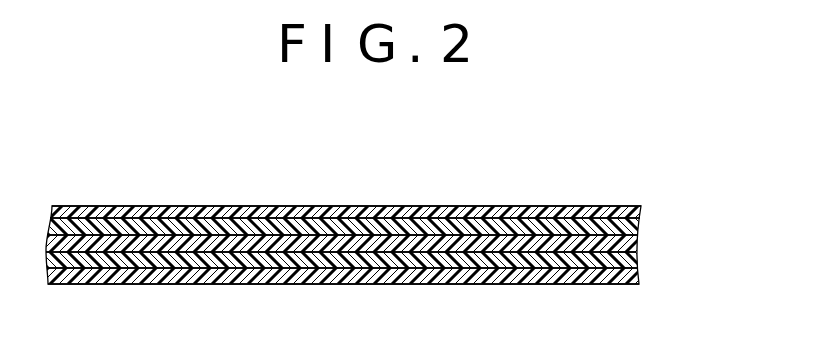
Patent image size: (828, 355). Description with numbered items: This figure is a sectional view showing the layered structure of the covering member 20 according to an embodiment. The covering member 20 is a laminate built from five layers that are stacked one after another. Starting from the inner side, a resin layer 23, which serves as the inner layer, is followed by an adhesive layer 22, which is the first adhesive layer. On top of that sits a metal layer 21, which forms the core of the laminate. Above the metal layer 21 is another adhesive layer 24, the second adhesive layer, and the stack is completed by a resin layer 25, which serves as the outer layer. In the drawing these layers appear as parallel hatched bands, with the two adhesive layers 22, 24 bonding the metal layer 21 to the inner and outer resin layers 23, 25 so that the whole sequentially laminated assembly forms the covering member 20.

The covering member 20 is at (483, 190).
The metal layer 21 is at (636, 245).
The adhesive layer 22 is at (634, 262).
The resin layer 23 is at (636, 279).
The adhesive layer 24 is at (637, 229).
The resin layer 25 is at (640, 209).